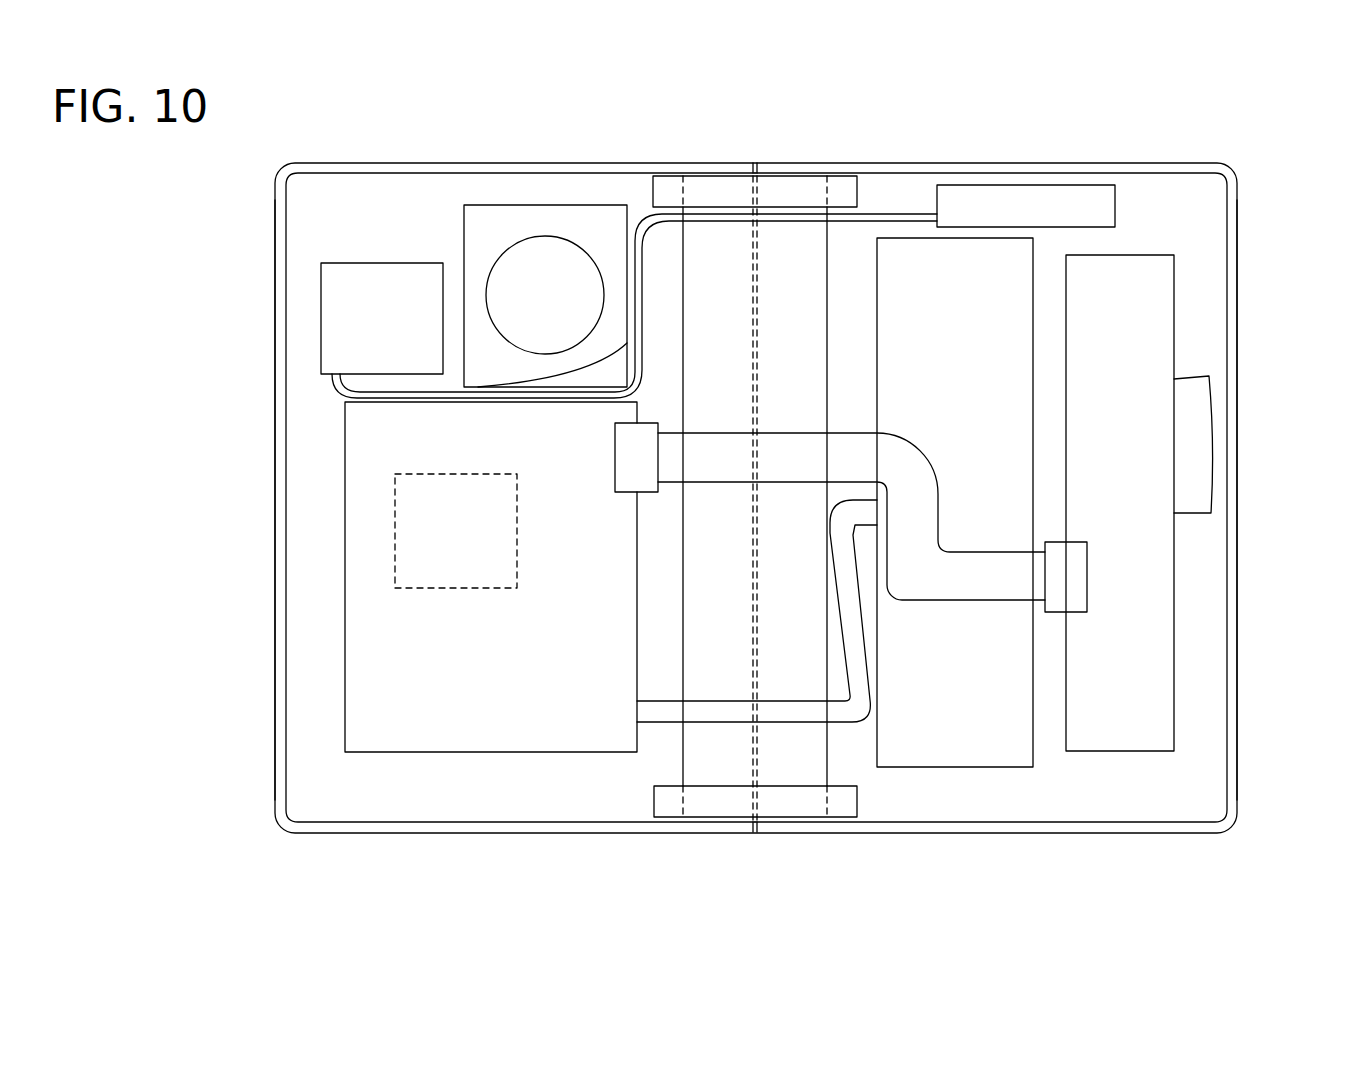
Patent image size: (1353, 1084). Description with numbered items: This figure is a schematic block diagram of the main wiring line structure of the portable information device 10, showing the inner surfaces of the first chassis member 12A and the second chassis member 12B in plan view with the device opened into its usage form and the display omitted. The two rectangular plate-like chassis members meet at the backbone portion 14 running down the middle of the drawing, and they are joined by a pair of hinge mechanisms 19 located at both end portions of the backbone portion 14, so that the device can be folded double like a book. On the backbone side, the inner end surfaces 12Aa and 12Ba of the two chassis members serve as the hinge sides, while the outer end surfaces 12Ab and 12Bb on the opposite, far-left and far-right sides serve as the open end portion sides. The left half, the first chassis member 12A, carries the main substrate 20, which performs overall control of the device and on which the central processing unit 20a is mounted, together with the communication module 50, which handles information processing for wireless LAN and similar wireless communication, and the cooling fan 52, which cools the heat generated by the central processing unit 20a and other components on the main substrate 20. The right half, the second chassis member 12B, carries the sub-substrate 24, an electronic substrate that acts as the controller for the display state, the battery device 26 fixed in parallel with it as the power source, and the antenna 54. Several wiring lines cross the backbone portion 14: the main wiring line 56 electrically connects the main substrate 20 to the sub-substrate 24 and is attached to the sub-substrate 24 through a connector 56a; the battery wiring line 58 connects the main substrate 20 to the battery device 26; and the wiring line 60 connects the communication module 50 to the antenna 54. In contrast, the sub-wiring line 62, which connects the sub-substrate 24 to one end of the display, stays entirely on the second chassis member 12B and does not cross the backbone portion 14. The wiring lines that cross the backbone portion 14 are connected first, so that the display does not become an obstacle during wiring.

The portable information device 10 is at (231, 106).
The first chassis member 12A is at (492, 832).
The second chassis member 12B is at (1063, 832).
The inner end surface 12Aa is at (760, 773).
The inner end surface 12Ba is at (755, 792).
The outer end surface 12Ab is at (275, 780).
The outer end surface 12Bb is at (1237, 780).
The backbone portion 14 is at (817, 258).
The hinge mechanism 19 is at (710, 185).
The main substrate 20 is at (380, 733).
The central processing unit 20a is at (462, 598).
The sub-substrate 24 is at (1120, 733).
The battery device 26 is at (958, 750).
The communication module 50 is at (374, 270).
The cooling fan 52 is at (503, 217).
The antenna 54 is at (1043, 197).
The main wiring line 56 is at (925, 465).
The connector 56a is at (1075, 570).
The battery wiring line 58 is at (858, 638).
The wiring line 60 is at (647, 218).
The sub-wiring line 62 is at (1195, 445).